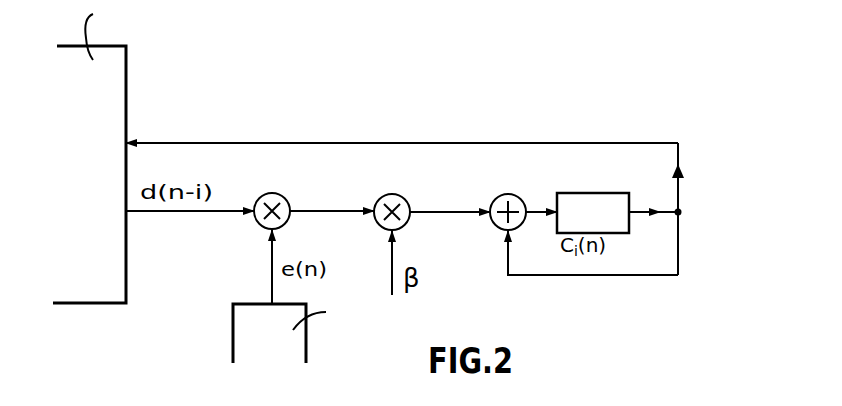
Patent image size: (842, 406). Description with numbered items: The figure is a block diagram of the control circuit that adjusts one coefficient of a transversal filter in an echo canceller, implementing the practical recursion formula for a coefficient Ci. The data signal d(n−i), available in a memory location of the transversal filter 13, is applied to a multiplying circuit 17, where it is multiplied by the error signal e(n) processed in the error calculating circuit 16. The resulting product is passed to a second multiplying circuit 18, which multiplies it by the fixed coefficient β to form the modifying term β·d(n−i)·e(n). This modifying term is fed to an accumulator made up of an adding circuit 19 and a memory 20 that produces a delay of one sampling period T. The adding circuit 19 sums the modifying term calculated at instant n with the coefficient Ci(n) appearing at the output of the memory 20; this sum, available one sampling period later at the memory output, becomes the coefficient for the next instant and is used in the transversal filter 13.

The transversal filter 13 is at (126, 88).
The error calculating circuit 16 is at (306, 330).
The multiplying circuit 17 is at (298, 172).
The multiplying circuit 18 is at (410, 174).
The adding circuit 19 is at (507, 194).
The memory 20 is at (596, 204).